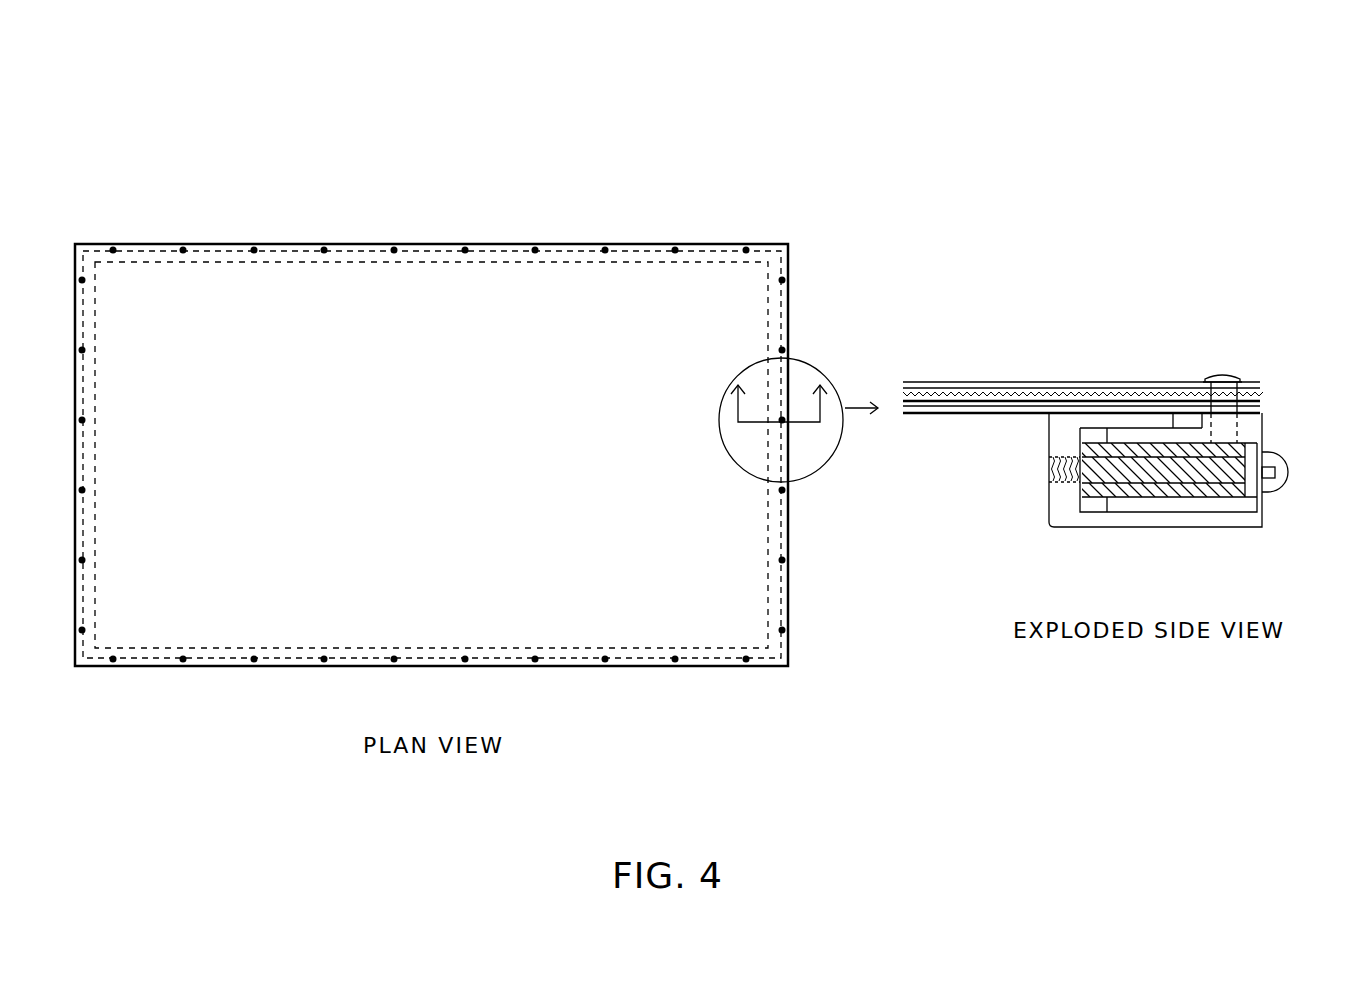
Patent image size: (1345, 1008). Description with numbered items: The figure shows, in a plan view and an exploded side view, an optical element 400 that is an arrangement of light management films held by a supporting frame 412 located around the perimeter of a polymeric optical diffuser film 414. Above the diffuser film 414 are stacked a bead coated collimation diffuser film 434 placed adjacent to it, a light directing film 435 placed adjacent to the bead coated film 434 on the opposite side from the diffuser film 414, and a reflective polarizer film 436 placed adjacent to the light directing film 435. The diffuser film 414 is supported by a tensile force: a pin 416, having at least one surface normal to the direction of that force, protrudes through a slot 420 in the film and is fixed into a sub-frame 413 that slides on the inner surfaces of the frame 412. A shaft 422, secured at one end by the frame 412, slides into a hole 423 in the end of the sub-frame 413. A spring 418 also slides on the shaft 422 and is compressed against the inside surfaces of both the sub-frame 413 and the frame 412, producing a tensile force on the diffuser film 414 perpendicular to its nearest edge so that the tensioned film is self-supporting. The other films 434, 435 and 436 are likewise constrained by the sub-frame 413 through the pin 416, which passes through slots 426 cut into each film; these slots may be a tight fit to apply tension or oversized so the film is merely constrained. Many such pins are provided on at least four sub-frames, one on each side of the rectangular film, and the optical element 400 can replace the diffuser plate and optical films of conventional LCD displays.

The optical element 400 is at (478, 75).
The frame 412 is at (1063, 505).
The sub-frame 413 is at (1250, 440).
The polymeric optical diffuser film 414 is at (952, 405).
The pin 416 is at (1218, 376).
The spring 418 is at (1090, 462).
The slot 420 is at (1205, 403).
The shaft 422 is at (1152, 472).
The hole 423 is at (1252, 472).
The slots 426 is at (1243, 382).
The bead coated collimation diffuser film 434 is at (963, 396).
The light directing film 435 is at (997, 392).
The reflective polarizer film 436 is at (1030, 385).